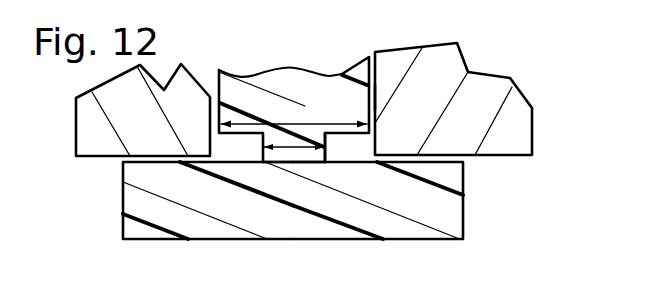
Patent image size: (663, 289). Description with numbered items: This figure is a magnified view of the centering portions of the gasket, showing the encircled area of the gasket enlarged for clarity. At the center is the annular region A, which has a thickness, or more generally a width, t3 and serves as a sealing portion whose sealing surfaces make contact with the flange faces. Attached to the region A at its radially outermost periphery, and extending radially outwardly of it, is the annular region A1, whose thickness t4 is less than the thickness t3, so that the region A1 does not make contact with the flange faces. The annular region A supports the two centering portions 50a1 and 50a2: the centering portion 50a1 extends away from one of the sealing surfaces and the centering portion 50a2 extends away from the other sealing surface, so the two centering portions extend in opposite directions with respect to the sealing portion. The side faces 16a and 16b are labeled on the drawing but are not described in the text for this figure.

The first side face of projection 16a is at (370, 107).
The second side face of projection 16b is at (214, 108).
The annular region A is at (375, 97).
The thickness of annular region A t3 is at (292, 124).
The thickness of annular region A1 t4 is at (293, 150).
The annular region A1 is at (332, 147).
The centering portion 50a1 is at (180, 228).
The centering portion 50a2 is at (415, 228).